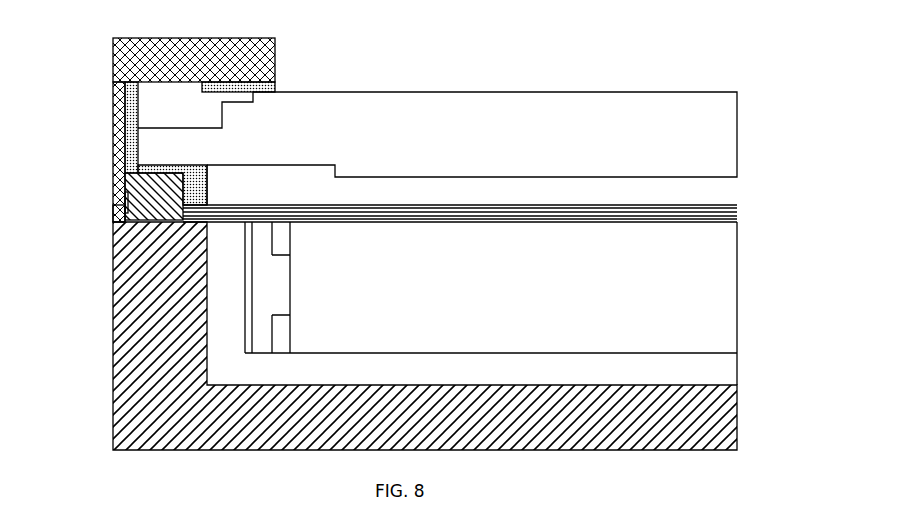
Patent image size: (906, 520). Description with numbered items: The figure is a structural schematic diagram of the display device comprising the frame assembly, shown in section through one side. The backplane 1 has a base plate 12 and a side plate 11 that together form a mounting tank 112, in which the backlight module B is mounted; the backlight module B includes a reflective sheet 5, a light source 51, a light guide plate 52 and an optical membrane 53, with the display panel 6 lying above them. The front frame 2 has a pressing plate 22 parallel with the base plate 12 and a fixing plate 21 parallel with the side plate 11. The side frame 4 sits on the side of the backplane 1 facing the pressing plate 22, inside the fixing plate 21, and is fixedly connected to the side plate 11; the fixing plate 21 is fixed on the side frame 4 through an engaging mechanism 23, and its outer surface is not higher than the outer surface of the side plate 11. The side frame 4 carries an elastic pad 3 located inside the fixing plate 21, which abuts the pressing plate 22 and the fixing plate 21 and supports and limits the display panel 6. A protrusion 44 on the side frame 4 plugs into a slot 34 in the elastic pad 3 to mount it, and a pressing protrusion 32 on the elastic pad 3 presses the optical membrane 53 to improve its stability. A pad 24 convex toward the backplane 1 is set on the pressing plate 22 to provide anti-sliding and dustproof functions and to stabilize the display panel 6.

The backplane 1 is at (388, 336).
The side plate 11 is at (125, 315).
The base plate 12 is at (310, 420).
The front frame 2 is at (184, 92).
The pressing plate 22 is at (198, 47).
The fixing plate 21 is at (124, 122).
The pad 24 is at (276, 88).
The elastic pad 3 is at (121, 146).
The side frame 4 is at (125, 195).
The protrusion 44 is at (125, 177).
The engaging mechanism 23 is at (113, 212).
The slot 34 is at (153, 170).
The pressing protrusion 32 is at (205, 193).
The display panel 6 is at (737, 138).
The optical membrane 53 is at (737, 215).
The light source 51 is at (268, 290).
The light guide plate 52 is at (737, 295).
The reflective sheet 5 is at (737, 375).
The mounting tank 112 is at (435, 333).
The backlight module B is at (775, 185).